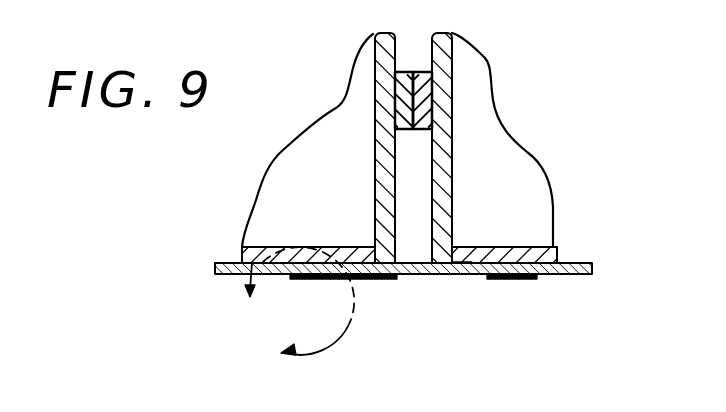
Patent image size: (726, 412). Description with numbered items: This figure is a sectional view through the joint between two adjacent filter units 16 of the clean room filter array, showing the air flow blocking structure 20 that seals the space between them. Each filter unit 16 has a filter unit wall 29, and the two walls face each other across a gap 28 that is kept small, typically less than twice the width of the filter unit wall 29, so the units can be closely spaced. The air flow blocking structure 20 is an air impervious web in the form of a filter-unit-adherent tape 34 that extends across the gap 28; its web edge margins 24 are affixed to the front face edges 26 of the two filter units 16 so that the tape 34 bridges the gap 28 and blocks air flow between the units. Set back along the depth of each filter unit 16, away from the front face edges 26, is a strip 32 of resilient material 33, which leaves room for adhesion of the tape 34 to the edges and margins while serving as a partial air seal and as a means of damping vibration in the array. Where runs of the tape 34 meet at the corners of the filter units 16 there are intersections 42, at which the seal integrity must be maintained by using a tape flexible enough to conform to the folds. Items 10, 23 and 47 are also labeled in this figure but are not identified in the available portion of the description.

The assembly rotation direction 10 is at (251, 306).
The filter unit 16 is at (280, 143).
The air flow blocking structure 20 is at (490, 274).
The aperture 23 is at (417, 279).
The web edge margin 24 is at (467, 260).
The front face edge 26 is at (507, 279).
The gap 28 is at (412, 163).
The filter unit wall 29 is at (458, 103).
The strip 32 is at (428, 82).
The resilient material 33 is at (402, 88).
The tape 34 is at (573, 258).
The intersection 42 is at (398, 279).
The lip 47 is at (242, 250).